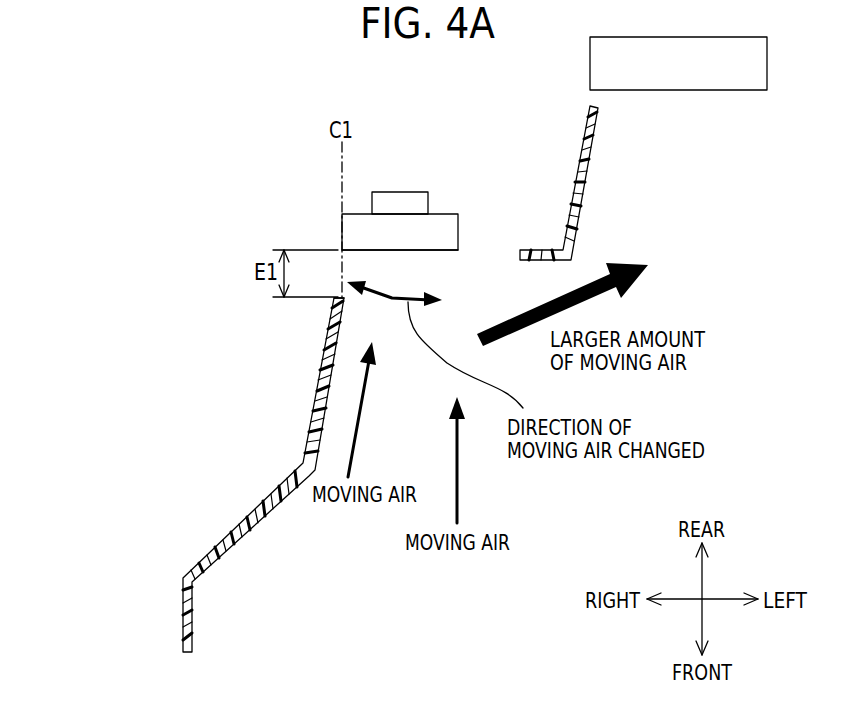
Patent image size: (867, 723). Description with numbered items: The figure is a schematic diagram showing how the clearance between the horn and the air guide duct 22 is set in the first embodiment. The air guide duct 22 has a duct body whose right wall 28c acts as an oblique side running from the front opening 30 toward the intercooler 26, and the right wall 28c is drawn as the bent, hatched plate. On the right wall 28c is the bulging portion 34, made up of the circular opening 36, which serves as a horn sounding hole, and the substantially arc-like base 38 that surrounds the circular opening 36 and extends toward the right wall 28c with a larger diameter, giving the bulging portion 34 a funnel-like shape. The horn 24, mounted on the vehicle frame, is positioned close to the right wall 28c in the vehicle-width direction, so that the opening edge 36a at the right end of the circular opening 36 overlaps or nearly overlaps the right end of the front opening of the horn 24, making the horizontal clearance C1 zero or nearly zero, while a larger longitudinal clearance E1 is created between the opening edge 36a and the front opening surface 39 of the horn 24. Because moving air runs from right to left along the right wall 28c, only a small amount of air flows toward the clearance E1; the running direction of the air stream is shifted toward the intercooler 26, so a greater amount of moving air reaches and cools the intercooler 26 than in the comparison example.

The air guide duct 22 is at (235, 484).
The horn 24 is at (444, 205).
The intercooler 26 is at (588, 60).
The right wall 28c is at (233, 535).
The opening 30 is at (187, 652).
The bulging portion 34 is at (326, 436).
The circular opening 36 is at (518, 253).
The opening edge 36a is at (341, 298).
The base 38 is at (318, 388).
The front opening surface 39 is at (380, 250).